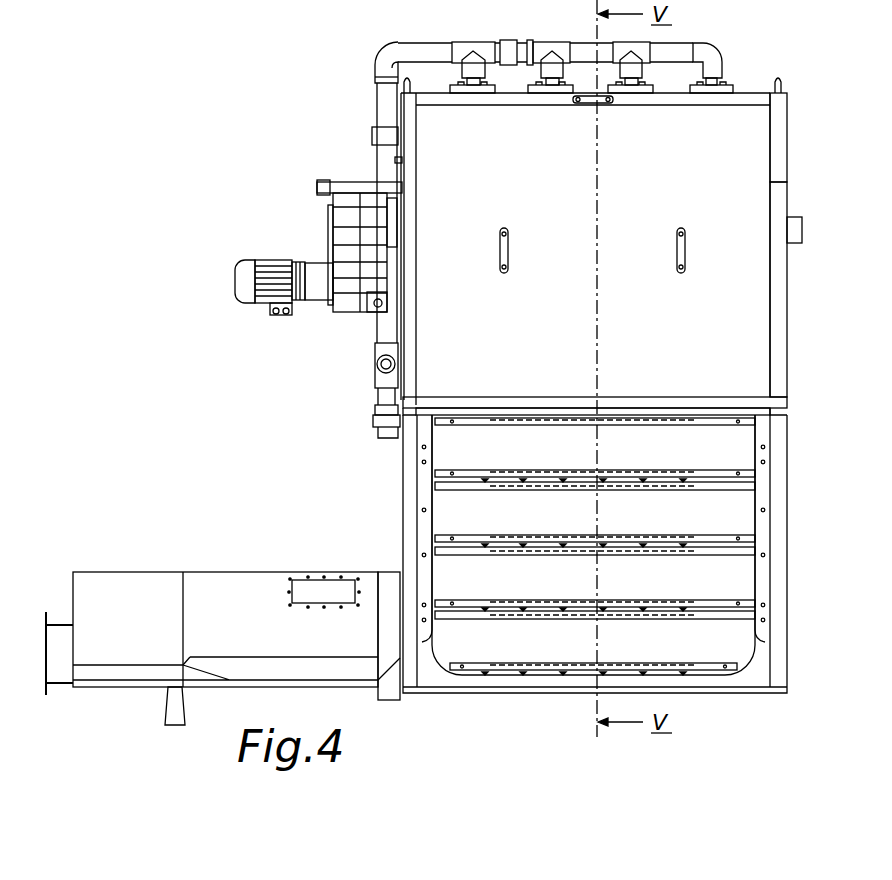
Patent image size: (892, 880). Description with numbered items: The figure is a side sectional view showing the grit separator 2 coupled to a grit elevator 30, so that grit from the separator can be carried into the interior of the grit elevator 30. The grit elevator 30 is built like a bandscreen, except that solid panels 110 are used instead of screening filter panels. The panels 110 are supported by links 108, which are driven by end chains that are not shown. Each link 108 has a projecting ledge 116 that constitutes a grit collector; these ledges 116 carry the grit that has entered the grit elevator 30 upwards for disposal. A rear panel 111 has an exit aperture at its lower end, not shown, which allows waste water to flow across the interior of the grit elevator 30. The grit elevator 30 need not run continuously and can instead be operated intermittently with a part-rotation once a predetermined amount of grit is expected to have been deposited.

The grit separator 2 is at (215, 563).
The grit elevator 30 is at (367, 444).
The links 108 is at (749, 485).
The solid panels 110 is at (452, 513).
The rear panel 111 is at (782, 657).
The projecting ledge 116 is at (515, 477).